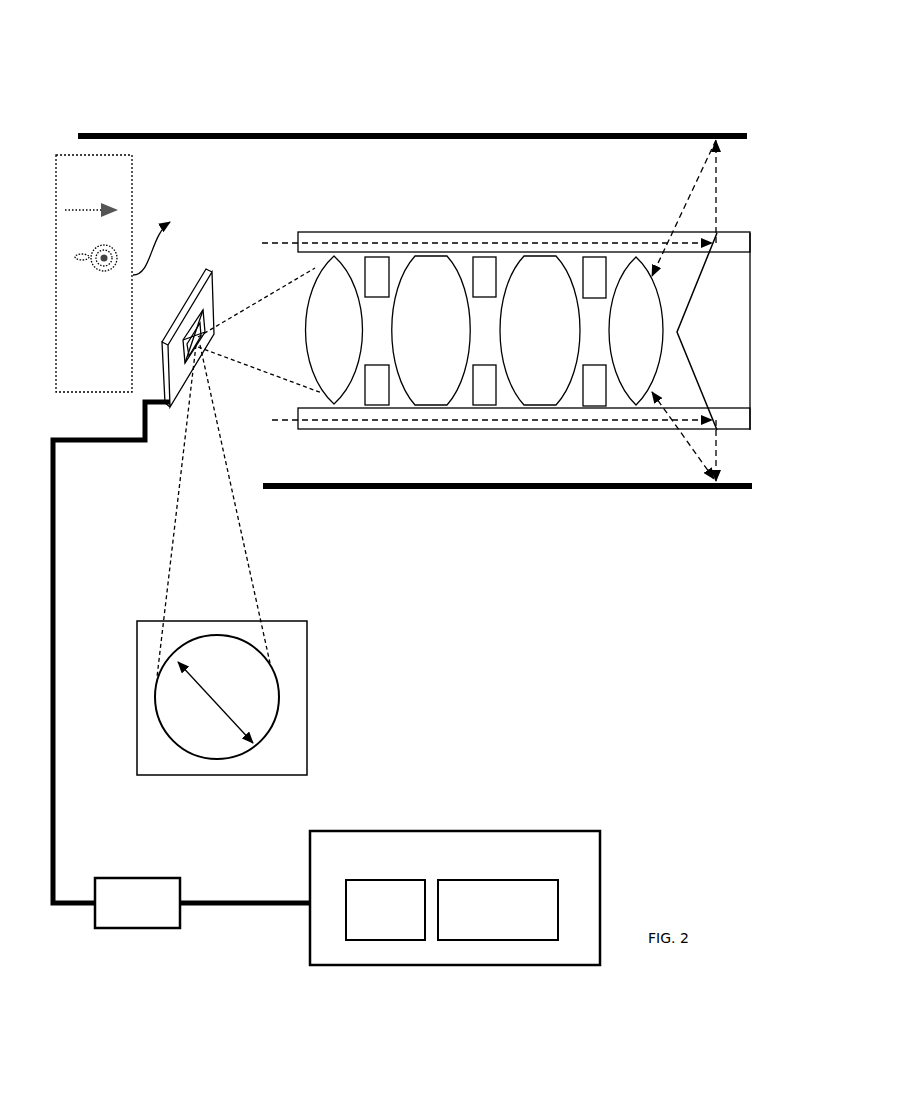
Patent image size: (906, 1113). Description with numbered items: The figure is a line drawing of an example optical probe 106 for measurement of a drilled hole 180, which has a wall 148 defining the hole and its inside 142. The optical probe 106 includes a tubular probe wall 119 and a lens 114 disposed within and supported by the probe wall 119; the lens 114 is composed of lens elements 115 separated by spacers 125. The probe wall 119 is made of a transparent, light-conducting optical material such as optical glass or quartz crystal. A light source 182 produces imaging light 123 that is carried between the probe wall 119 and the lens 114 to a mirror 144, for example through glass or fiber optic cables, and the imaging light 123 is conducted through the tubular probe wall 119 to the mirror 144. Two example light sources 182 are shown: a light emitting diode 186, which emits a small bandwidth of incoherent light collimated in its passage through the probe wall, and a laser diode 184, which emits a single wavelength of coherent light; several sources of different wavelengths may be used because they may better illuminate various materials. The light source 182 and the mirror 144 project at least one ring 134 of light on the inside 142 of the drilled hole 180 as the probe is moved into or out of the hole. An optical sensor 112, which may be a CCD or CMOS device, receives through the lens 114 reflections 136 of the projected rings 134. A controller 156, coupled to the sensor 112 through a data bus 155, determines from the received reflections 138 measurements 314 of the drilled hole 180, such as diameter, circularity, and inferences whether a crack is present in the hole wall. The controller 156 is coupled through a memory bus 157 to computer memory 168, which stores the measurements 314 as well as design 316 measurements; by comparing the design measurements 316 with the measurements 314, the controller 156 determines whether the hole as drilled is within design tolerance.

The optical probe 106 is at (582, 203).
The optical sensor 112 is at (330, 768).
The lens 114 is at (273, 387).
The lens elements 115 is at (485, 330).
The probe wall 119 is at (503, 517).
The imaging light 123 is at (262, 243).
The spacers 125 is at (566, 406).
The ring of light 134 is at (723, 458).
The reflections 136 is at (680, 447).
The received reflections 138 is at (283, 696).
The inside of the drilled hole 142 is at (498, 142).
The mirror 144 is at (700, 370).
The wall 148 is at (385, 130).
The data bus 155 is at (111, 652).
The controller 156 is at (137, 903).
The memory bus 157 is at (245, 892).
The memory 168 is at (455, 898).
The drilled hole 180 is at (469, 106).
The light source 182 is at (113, 273).
The laser diode 184 is at (95, 266).
The light emitting diode 186 is at (91, 199).
The measurements 314 is at (368, 801).
The design measurements 316 is at (385, 910).